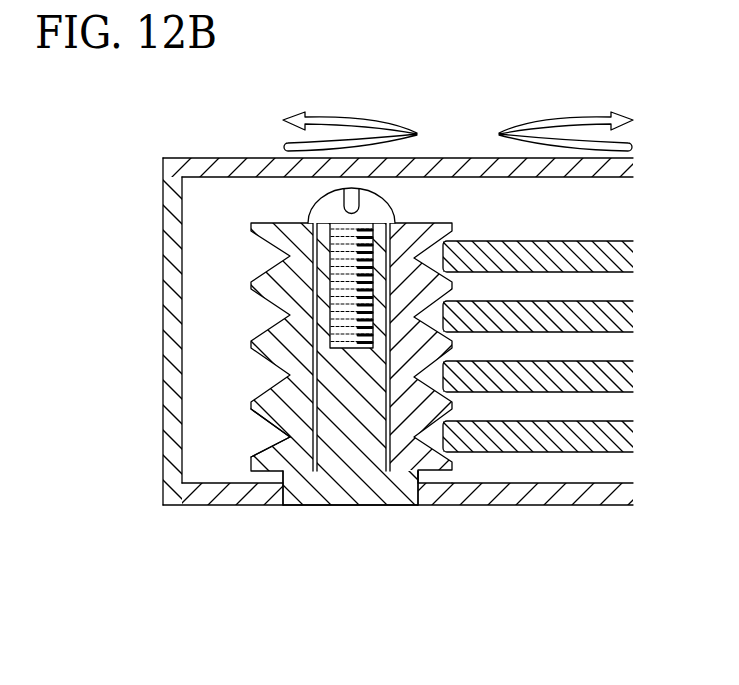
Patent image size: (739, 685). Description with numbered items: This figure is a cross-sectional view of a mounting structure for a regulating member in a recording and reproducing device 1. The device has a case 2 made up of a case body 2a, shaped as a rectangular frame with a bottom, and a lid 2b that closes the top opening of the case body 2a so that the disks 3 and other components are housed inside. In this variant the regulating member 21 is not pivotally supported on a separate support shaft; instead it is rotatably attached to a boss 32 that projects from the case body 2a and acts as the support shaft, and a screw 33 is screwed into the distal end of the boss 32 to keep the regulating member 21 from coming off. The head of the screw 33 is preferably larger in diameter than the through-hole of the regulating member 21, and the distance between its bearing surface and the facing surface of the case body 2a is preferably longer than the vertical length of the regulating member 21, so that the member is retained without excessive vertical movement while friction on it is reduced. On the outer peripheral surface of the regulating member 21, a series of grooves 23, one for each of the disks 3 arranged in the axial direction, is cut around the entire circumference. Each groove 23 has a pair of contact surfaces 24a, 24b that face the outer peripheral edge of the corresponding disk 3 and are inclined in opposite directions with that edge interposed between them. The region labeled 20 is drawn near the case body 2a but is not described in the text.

The recording and reproducing device 1 is at (48, 135).
The case 2 is at (369, 342).
The case body 2a is at (481, 504).
The lid 2b is at (465, 157).
The disk 3 is at (543, 455).
The opening in bottom wall 20 is at (440, 476).
The regulating member 21 is at (298, 457).
The groove 23 is at (369, 366).
The contact surface 24a is at (267, 457).
The contact surface 24b is at (283, 434).
The boss 32 is at (322, 322).
The screw 33 is at (323, 212).